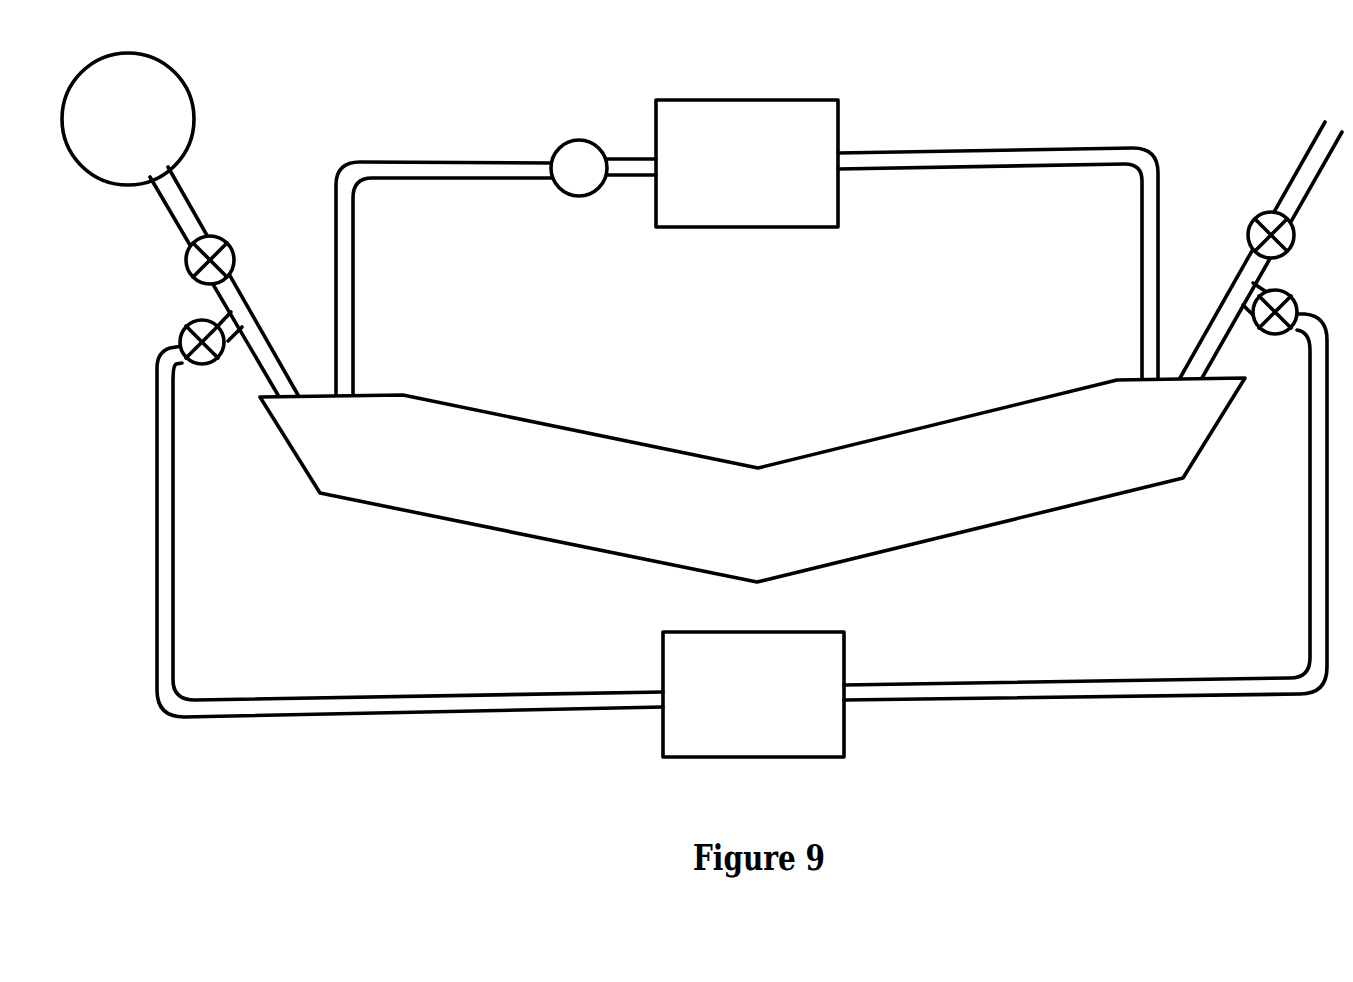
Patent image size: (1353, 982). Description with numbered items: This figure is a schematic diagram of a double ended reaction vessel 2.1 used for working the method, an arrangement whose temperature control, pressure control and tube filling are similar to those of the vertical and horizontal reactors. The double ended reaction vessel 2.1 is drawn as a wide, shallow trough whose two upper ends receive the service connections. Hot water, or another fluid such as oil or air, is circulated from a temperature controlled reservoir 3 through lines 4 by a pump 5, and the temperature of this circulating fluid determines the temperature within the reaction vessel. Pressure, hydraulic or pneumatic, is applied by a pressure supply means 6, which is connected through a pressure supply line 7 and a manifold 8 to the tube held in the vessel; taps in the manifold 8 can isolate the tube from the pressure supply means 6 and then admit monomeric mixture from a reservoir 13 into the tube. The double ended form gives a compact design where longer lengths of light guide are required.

The double ended reaction vessel 2.1 is at (752, 480).
The temperature controlled reservoir 3 is at (747, 163).
The lines 4 is at (945, 152).
The pump 5 is at (579, 168).
The pressure supply means 6 is at (753, 694).
The pressure supply line 7 is at (957, 683).
The manifold 8 is at (245, 297).
The reservoir 13 is at (128, 119).